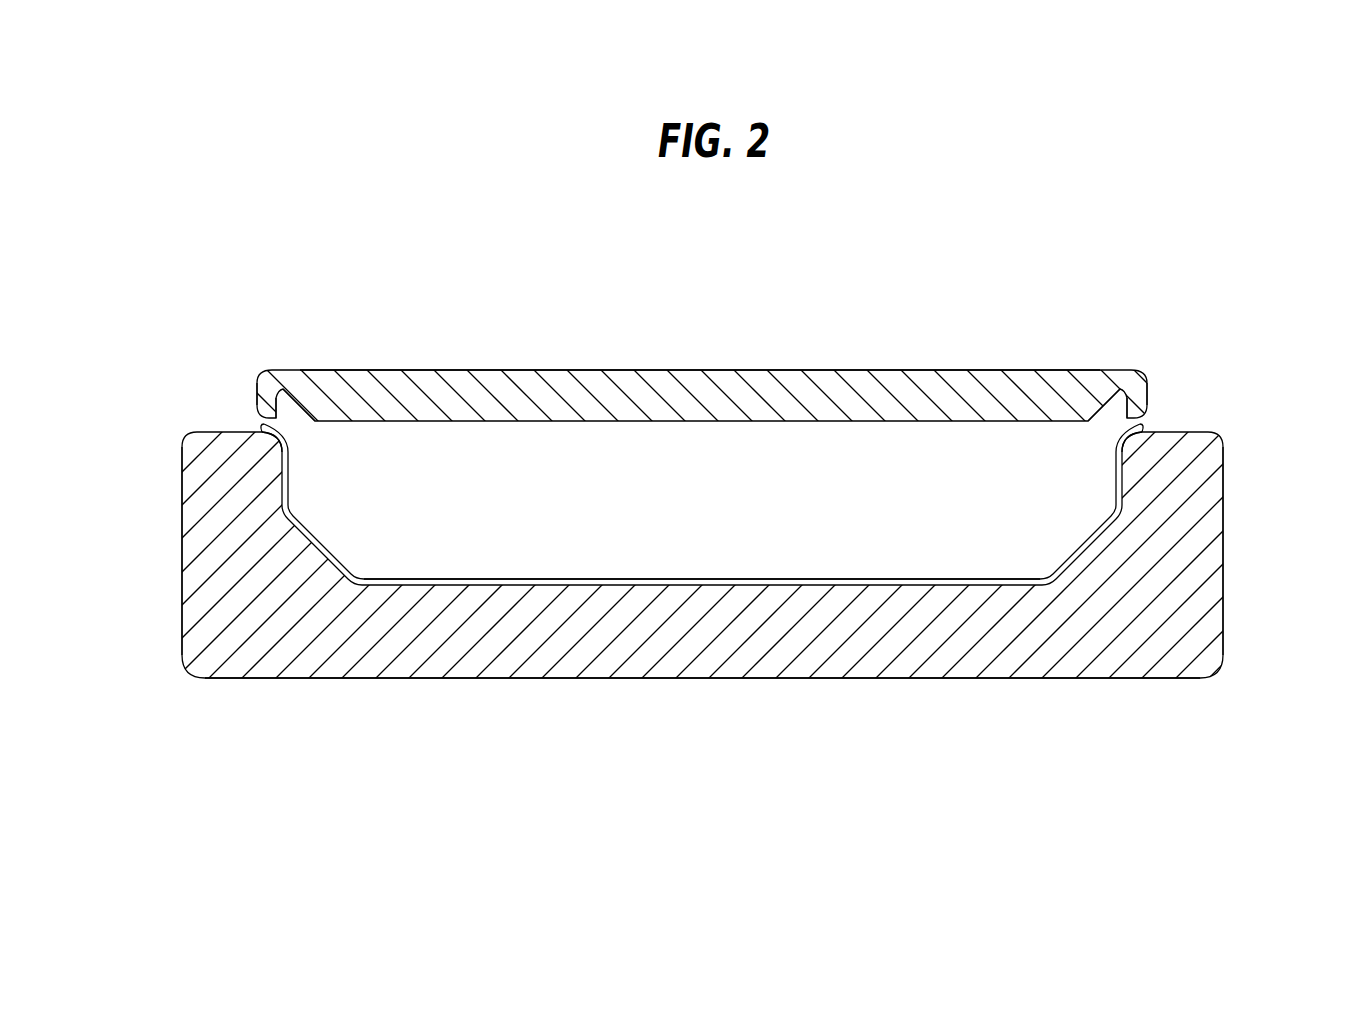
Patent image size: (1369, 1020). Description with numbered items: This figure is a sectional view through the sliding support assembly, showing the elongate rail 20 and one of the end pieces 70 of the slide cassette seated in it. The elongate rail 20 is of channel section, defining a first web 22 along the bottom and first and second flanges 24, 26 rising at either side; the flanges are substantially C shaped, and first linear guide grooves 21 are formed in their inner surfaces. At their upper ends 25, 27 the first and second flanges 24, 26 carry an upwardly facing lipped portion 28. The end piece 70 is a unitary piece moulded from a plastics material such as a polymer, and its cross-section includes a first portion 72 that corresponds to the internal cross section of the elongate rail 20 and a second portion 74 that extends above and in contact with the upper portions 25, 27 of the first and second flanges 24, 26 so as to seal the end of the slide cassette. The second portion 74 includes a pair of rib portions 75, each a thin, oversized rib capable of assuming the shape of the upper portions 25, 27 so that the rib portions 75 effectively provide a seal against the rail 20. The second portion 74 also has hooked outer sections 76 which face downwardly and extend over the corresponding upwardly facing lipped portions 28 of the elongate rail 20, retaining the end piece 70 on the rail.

The elongate rail 20 is at (1178, 493).
The first linear guide grooves 21 is at (280, 515).
The first web 22 is at (605, 638).
The first flange 24 is at (207, 575).
The upper portion of first flange 25 is at (272, 432).
The second flange 26 is at (1200, 577).
The upper portion of second flange 27 is at (1125, 432).
The lipped portion 28 is at (285, 420).
The end piece 70 is at (662, 352).
The first portion of end piece 72 is at (920, 535).
The second portion of end piece 74 is at (832, 390).
The rib portion 75 is at (287, 377).
The hooked outer section 76 is at (265, 402).